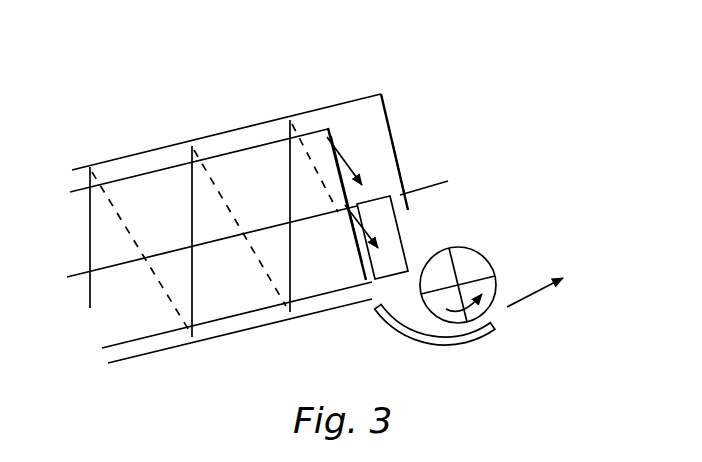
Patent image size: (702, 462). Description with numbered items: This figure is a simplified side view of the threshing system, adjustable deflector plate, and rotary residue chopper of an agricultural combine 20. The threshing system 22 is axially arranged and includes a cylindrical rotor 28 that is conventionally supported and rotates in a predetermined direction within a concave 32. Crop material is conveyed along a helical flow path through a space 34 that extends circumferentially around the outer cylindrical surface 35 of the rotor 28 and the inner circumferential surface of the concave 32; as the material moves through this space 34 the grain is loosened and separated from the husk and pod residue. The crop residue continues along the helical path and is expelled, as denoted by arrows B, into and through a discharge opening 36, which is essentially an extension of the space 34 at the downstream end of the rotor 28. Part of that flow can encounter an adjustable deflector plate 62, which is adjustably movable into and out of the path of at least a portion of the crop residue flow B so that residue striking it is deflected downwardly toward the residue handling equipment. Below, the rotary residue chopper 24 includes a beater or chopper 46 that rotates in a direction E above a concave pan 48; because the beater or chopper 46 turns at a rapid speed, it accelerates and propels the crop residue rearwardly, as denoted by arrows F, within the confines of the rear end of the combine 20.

The agricultural combine 20 is at (286, 207).
The threshing system 22 is at (382, 92).
The rotary residue chopper 24 is at (517, 264).
The cylindrical rotor 28 is at (335, 113).
The concave 32 is at (112, 161).
The space 34 is at (232, 141).
The outer cylindrical surface 35 is at (163, 170).
The discharge opening 36 is at (377, 145).
The beater or chopper 46 is at (481, 250).
The concave pan 48 is at (404, 337).
The adjustable deflector plate 62 is at (400, 235).
The crop residue flow arrows B is at (332, 156).
The rotation direction of beater or chopper E is at (460, 313).
The rearward crop residue flow arrows F is at (538, 297).